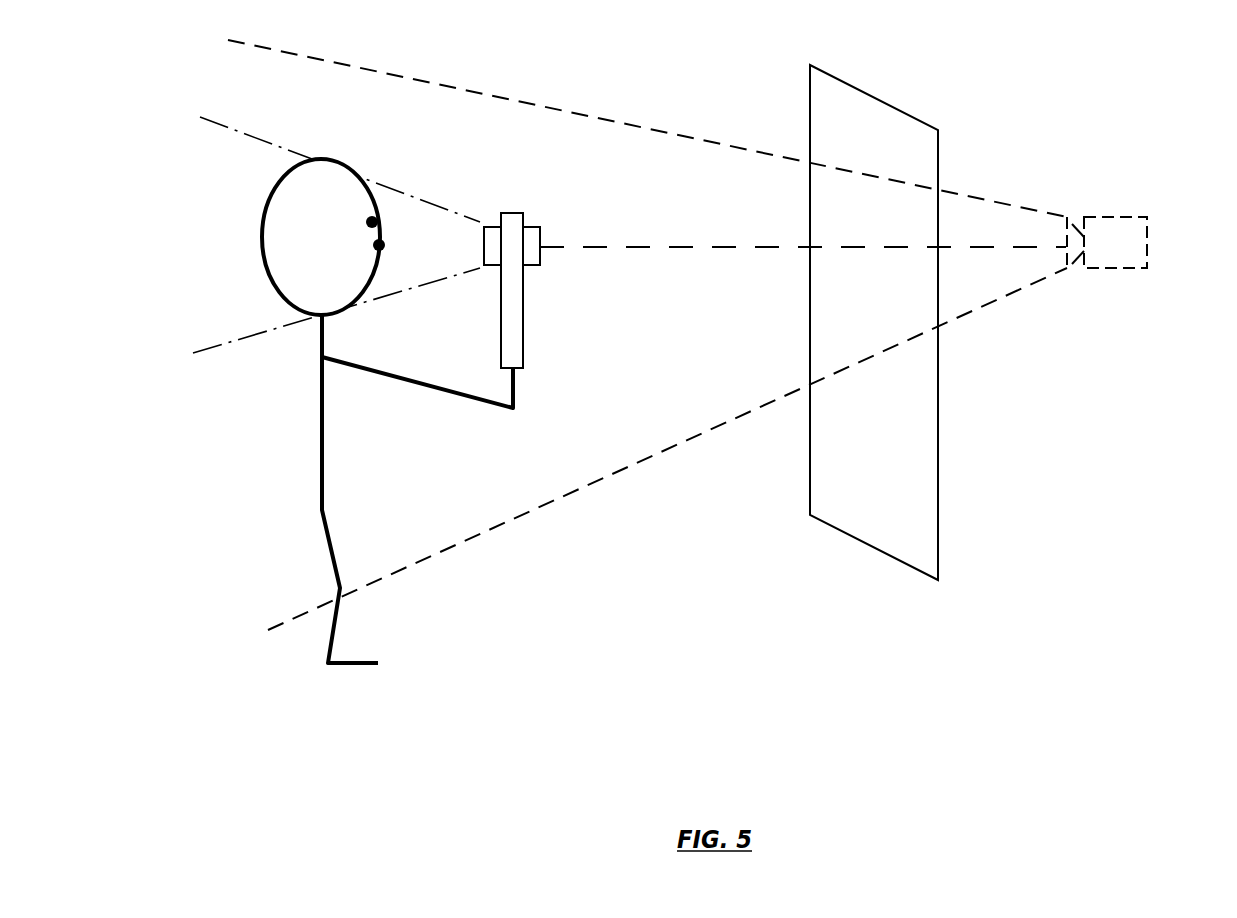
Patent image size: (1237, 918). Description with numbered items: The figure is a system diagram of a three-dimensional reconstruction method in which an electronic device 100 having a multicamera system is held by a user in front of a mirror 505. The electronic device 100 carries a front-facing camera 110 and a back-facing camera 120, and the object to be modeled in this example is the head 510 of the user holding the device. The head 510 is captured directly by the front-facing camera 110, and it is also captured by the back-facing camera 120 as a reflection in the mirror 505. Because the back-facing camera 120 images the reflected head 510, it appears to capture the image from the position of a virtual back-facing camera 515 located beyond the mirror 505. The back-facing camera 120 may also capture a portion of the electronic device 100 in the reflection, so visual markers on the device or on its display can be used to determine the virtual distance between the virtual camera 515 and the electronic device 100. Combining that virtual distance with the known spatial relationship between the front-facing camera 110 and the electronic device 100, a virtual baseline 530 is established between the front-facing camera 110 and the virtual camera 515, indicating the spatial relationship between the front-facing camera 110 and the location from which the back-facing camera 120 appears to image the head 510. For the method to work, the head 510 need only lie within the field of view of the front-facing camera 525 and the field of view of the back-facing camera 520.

The electronic device 100 is at (555, 277).
The front-facing camera 110 is at (455, 269).
The back-facing camera 120 is at (574, 258).
The mirror 505 is at (890, 322).
The head of a user 510 is at (387, 408).
The virtual back-facing camera 515 is at (1147, 222).
The field of view of the back-facing camera 520 is at (647, 335).
The field of view of the front-facing camera 525 is at (336, 224).
The virtual baseline 530 is at (803, 251).